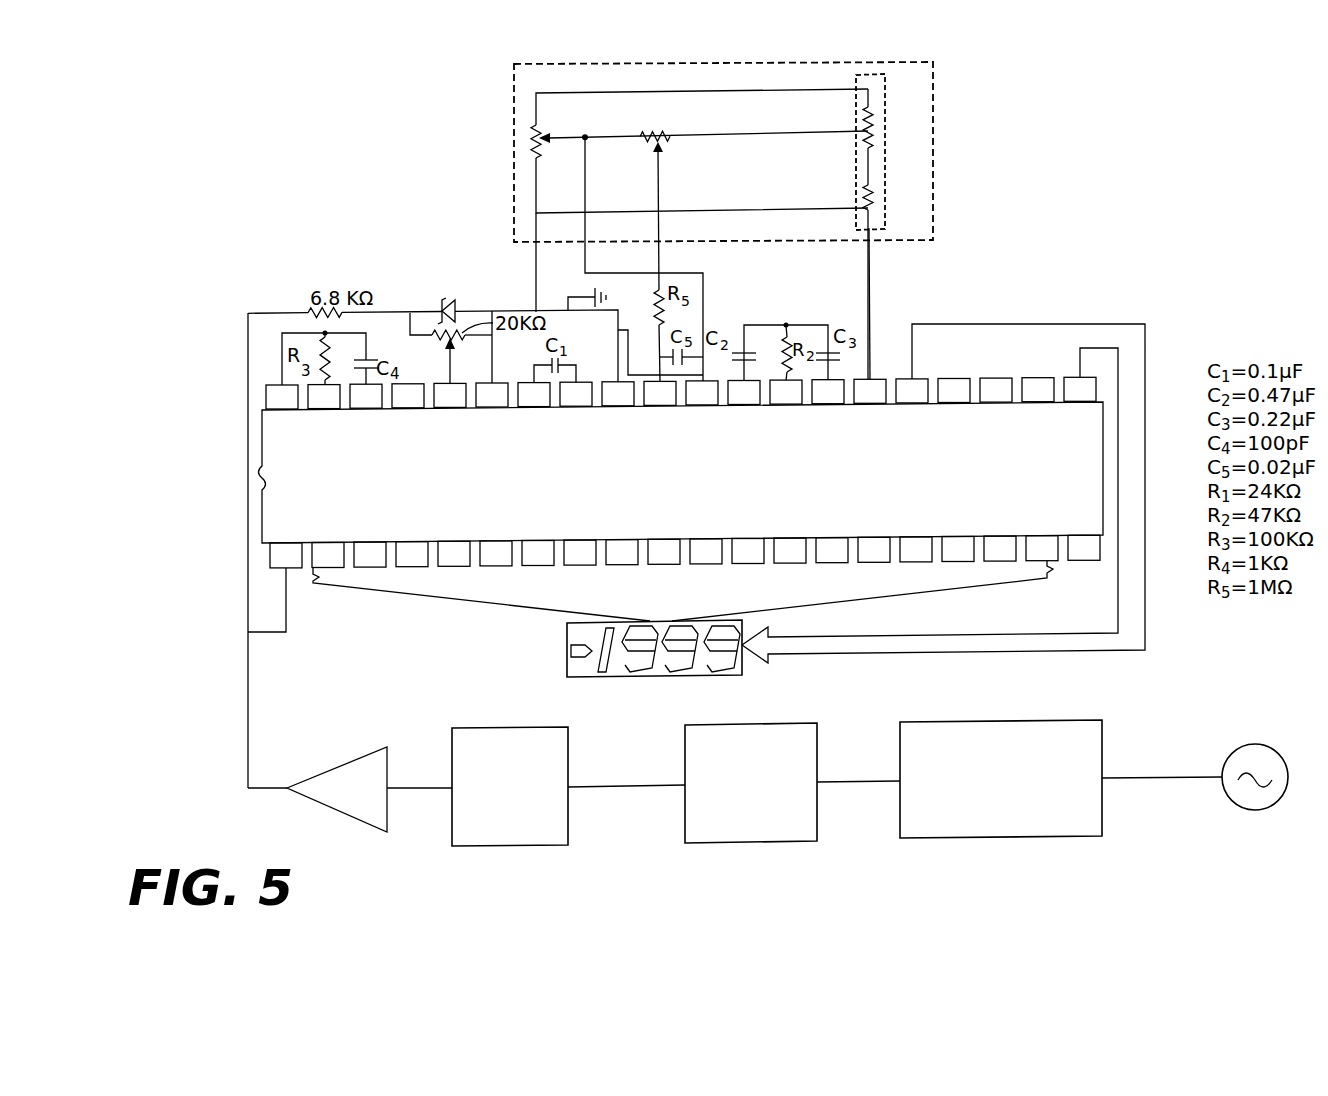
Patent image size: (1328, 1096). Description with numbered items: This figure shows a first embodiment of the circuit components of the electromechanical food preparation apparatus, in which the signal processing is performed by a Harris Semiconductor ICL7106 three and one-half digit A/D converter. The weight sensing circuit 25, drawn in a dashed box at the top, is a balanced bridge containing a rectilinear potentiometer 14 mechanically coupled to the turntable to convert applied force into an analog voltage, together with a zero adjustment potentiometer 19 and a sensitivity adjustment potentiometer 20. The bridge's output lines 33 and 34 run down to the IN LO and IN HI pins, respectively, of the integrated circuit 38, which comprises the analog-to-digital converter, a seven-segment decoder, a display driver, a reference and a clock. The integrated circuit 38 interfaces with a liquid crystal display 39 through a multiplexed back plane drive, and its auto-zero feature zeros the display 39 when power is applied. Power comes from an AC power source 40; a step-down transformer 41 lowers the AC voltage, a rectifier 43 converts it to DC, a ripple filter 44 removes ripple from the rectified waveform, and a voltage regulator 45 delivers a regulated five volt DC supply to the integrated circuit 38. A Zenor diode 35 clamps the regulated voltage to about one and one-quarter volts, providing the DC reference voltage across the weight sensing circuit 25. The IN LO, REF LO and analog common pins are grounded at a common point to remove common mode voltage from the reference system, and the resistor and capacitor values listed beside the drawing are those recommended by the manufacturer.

The rectilinear potentiometer 14 is at (883, 116).
The zero adjustment potentiometer 19 is at (537, 127).
The sensitivity adjustment potentiometer 20 is at (665, 133).
The weight sensing circuit 25 is at (931, 74).
The output line 33 is at (586, 266).
The output line 34 is at (659, 266).
The Zenor diode 35 is at (450, 298).
The integrated circuit 38 is at (1104, 466).
The liquid crystal display 39 is at (618, 678).
The AC power source 40 is at (1258, 744).
The step-down transformer 41 is at (965, 722).
The rectifier 43 is at (727, 725).
The ripple filter 44 is at (487, 727).
The voltage regulator 45 is at (340, 768).